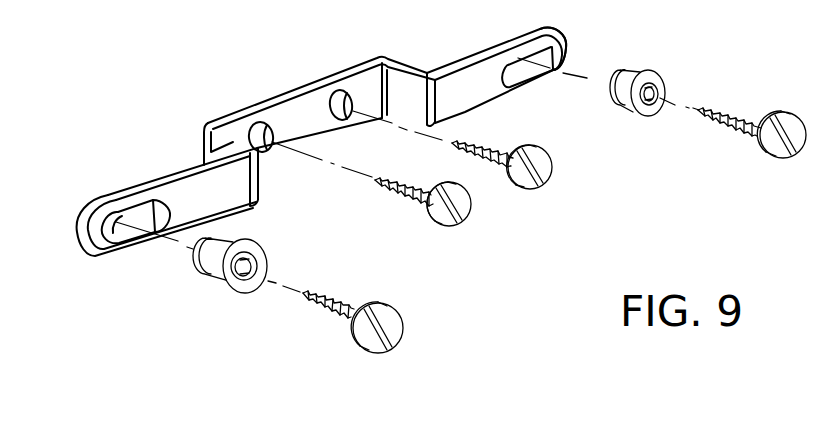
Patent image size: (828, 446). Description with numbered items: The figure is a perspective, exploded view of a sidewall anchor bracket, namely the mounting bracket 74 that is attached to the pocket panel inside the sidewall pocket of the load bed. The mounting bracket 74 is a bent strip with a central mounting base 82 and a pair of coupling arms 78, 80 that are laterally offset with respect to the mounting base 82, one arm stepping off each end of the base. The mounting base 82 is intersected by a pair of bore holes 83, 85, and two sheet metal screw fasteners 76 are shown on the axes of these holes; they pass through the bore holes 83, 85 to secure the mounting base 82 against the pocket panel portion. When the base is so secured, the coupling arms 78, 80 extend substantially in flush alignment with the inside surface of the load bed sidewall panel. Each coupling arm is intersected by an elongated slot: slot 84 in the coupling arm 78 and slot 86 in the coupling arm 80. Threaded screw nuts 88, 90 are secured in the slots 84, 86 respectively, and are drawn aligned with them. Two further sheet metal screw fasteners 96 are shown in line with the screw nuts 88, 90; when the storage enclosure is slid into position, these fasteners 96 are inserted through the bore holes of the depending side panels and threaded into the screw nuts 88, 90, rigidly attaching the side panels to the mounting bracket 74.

The mounting bracket 74 is at (136, 113).
The sheet metal screw fasteners 76 is at (505, 147).
The coupling arm 78 is at (115, 172).
The coupling arm 80 is at (542, 29).
The mounting base 82 is at (305, 88).
The bore hole 83 is at (257, 122).
The slot 84 is at (124, 238).
The bore hole 85 is at (350, 92).
The slot 86 is at (565, 56).
The threaded screw nut 88 is at (226, 287).
The threaded screw nut 90 is at (658, 80).
The sheet metal screw fasteners 96 is at (405, 324).